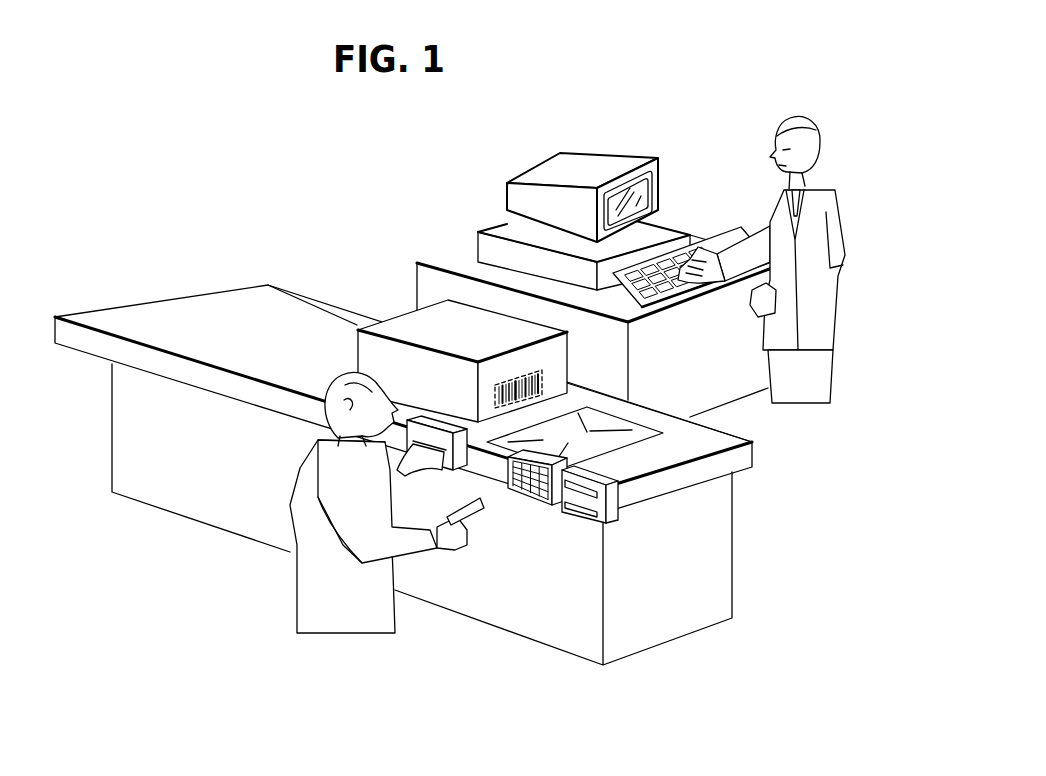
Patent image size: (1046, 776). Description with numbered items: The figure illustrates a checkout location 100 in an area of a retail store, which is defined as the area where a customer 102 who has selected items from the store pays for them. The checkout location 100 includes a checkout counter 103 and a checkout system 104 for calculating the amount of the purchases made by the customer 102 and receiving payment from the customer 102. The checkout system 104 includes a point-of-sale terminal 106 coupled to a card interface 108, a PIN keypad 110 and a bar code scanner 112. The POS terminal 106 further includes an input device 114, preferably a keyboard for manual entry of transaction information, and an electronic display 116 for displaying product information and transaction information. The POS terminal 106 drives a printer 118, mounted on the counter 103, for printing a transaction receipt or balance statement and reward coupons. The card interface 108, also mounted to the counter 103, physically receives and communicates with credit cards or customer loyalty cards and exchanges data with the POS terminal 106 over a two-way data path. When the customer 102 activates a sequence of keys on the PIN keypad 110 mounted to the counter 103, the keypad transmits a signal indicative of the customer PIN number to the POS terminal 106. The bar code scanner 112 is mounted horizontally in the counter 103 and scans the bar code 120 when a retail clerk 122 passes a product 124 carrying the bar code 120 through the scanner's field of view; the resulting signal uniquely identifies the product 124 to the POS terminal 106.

The checkout location 100 is at (286, 176).
The customer 102 is at (293, 480).
The checkout counter 103 is at (168, 313).
The checkout system 104 is at (466, 225).
The point-of-sale terminal 106 is at (510, 228).
The card interface 108 is at (613, 517).
The PIN keypad 110 is at (532, 503).
The bar code scanner 112 is at (640, 432).
The input device 114 is at (702, 257).
The electronic display 116 is at (567, 167).
The printer 118 is at (437, 460).
The bar code 120 is at (513, 378).
The retail clerk 122 is at (790, 115).
The product 124 is at (405, 325).